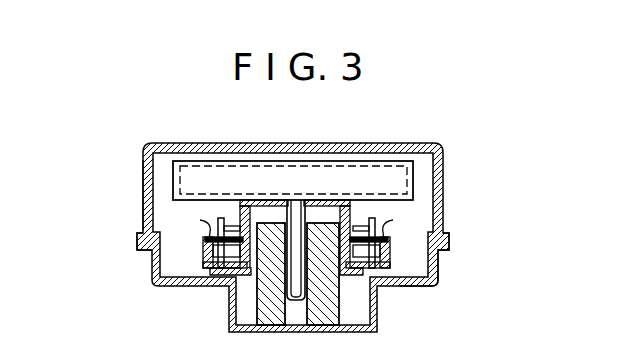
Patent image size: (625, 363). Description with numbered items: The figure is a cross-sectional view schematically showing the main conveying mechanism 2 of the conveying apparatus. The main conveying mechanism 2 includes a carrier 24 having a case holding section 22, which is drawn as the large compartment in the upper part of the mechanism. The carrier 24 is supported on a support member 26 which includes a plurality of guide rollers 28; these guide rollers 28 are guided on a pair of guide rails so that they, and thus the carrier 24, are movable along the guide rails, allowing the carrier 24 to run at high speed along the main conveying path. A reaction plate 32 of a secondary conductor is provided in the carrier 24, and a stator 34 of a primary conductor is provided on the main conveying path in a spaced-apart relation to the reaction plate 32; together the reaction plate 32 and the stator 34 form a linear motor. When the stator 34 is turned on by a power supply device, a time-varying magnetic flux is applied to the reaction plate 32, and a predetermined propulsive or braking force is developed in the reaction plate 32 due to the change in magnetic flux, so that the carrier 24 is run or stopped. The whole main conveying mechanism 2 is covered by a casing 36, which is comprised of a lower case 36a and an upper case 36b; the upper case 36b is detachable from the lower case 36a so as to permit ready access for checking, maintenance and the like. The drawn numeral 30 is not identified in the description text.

The main conveying mechanism 2 is at (442, 284).
The case holding section 22 is at (392, 168).
The carrier 24 is at (413, 172).
The support member 26 is at (355, 206).
The guide rollers 28 is at (212, 238).
The terminals 30 is at (207, 270).
The reaction plate 32 is at (300, 305).
The stator 34 is at (260, 305).
The casing 36 is at (153, 280).
The lower case 36a is at (152, 268).
The upper case 36b is at (143, 181).